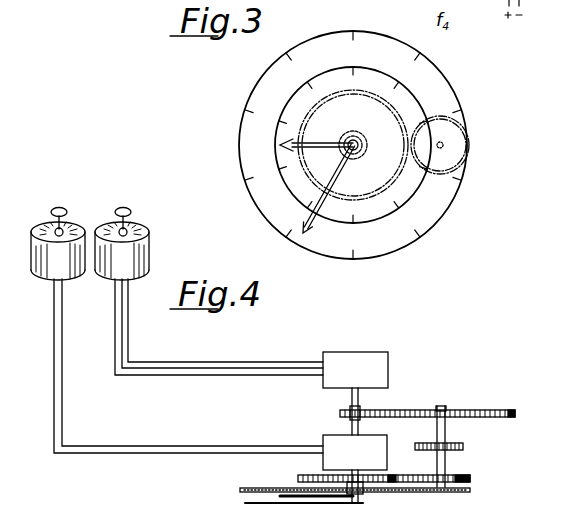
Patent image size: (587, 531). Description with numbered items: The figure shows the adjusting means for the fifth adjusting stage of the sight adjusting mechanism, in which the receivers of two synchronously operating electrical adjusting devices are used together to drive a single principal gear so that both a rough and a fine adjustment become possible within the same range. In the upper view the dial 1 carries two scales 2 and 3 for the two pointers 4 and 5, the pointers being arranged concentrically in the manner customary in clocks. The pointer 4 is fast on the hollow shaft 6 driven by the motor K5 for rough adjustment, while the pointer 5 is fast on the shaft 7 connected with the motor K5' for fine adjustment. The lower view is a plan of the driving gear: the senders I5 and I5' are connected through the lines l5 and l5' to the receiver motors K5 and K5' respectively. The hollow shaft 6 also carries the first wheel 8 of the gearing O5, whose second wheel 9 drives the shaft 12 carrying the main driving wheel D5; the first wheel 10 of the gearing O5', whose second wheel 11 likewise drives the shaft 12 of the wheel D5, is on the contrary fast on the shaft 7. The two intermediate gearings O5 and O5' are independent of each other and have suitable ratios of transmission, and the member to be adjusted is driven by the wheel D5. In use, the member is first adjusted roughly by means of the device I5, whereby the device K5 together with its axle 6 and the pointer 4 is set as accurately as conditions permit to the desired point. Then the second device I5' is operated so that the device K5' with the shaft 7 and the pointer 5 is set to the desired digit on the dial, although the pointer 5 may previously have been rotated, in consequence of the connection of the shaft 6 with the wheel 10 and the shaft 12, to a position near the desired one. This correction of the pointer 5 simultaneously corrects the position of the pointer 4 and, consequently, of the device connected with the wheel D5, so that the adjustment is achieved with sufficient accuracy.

In FIG. 3, the dial 1 is at (448, 103).
In FIG. 4, the dial 1 is at (240, 490).
In FIG. 3, the scale 2 is at (400, 200).
In FIG. 3, the scale 3 is at (417, 230).
In FIG. 3, the pointer 4 is at (313, 143).
In FIG. 4, the pointer 4 is at (311, 498).
In FIG. 3, the pointer 5 is at (303, 233).
In FIG. 4, the pointer 5 is at (272, 504).
In FIG. 4, the hollow shaft 6 is at (362, 490).
In FIG. 4, the shaft 7 is at (360, 402).
In FIG. 4, the first wheel 8 is at (302, 478).
In FIG. 4, the second wheel 9 is at (458, 484).
In FIG. 4, the first wheel 10 is at (359, 420).
In FIG. 4, the second wheel 11 is at (505, 410).
In FIG. 4, the shaft 12 is at (446, 462).
In FIG. 4, the adjusting device I5 is at (46, 230).
In FIG. 4, the adjusting device I5' is at (122, 229).
In FIG. 4, the conductor line l5 is at (188, 367).
In FIG. 4, the conductor line l5' is at (219, 327).
In FIG. 4, the motor K5 is at (370, 449).
In FIG. 4, the motor K5' is at (376, 368).
In FIG. 4, the main driving wheel D5 is at (458, 453).
In FIG. 4, the gearing O5 is at (483, 489).
In FIG. 4, the gearing O5' is at (531, 427).